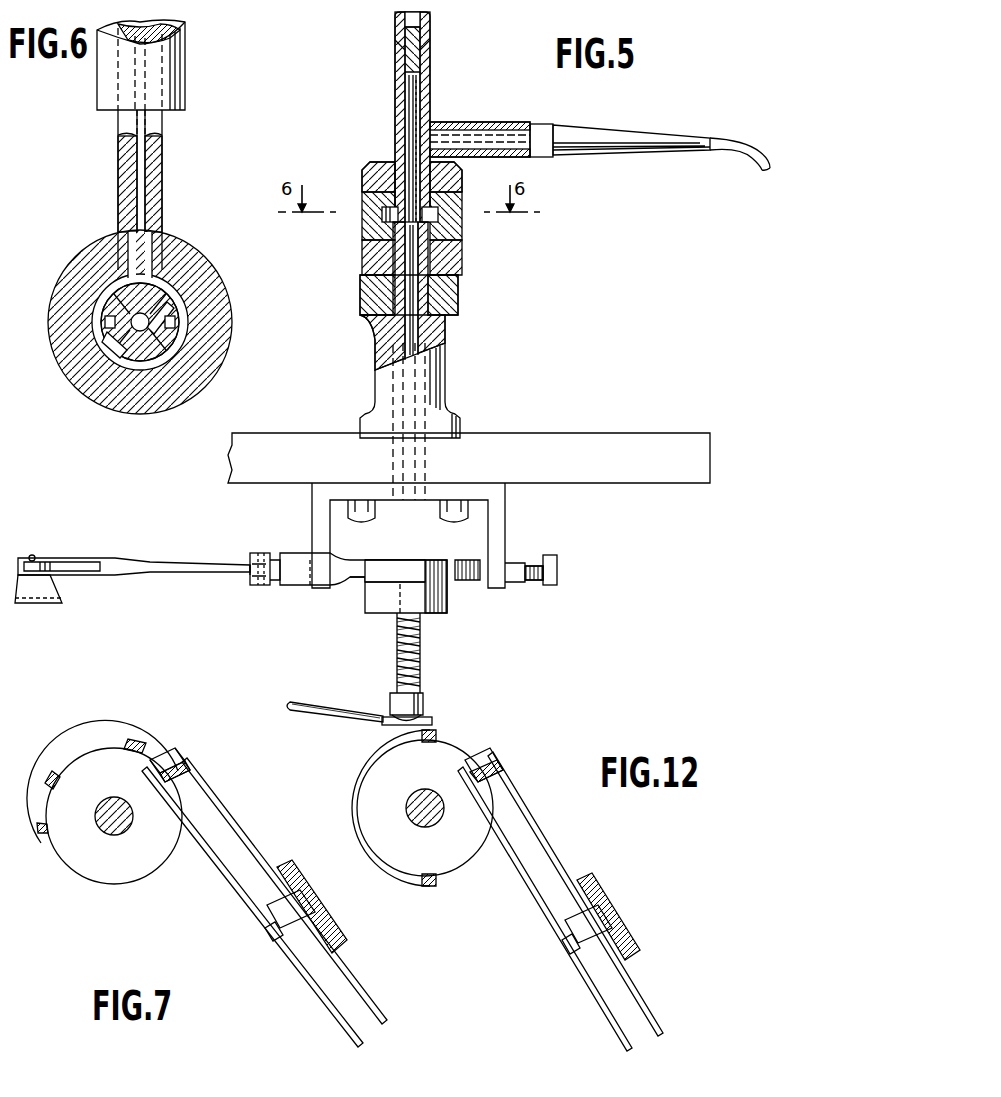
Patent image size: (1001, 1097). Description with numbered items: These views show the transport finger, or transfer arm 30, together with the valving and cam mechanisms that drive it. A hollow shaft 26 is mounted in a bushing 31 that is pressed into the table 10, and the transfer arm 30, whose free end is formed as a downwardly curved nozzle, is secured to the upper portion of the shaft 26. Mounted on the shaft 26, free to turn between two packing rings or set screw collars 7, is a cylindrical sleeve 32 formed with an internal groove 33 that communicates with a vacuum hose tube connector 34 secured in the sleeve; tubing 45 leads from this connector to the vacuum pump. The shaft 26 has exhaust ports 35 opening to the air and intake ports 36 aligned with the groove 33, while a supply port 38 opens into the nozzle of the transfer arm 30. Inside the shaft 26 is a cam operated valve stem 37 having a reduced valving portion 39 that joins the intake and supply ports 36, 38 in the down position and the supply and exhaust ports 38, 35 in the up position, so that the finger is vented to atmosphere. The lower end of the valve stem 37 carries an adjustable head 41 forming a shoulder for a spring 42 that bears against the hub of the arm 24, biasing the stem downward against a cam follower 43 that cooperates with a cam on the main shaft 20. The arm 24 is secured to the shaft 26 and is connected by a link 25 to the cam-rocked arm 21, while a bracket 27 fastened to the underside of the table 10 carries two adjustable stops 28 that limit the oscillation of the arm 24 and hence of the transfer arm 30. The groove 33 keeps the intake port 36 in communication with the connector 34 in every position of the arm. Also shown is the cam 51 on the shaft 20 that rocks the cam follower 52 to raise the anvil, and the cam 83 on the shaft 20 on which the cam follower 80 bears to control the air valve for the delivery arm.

In FIG. 6, the tubing 45 is at (168, 72).
In FIG. 6, the vacuum hose tube connector 34 is at (125, 183).
In FIG. 6, the internal groove 33 is at (100, 290).
In FIG. 5, the internal groove 33 is at (448, 240).
In FIG. 6, the cylindrical sleeve 32 is at (198, 284).
In FIG. 5, the cylindrical sleeve 32 is at (452, 210).
In FIG. 6, the intake ports 36 is at (176, 324).
In FIG. 5, the intake ports 36 is at (392, 214).
In FIG. 6, the hollow shaft 26 is at (120, 342).
In FIG. 5, the hollow shaft 26 is at (430, 320).
In FIG. 6, the cam operated valve stem 37 is at (138, 336).
In FIG. 5, the cam operated valve stem 37 is at (408, 344).
In FIG. 5, the exhaust ports 35 is at (396, 102).
In FIG. 5, the supply port 38 is at (432, 130).
In FIG. 5, the reduced valving portion 39 is at (410, 144).
In FIG. 5, the transfer arm 30 is at (605, 132).
In FIG. 5, the packing rings or set screw collars 7 is at (366, 180).
In FIG. 5, the bushing 31 is at (574, 445).
In FIG. 5, the table 10 is at (445, 378).
In FIG. 5, the bracket 27 is at (493, 530).
In FIG. 5, the adjustable stops 28 is at (258, 553).
In FIG. 5, the arm 24 is at (380, 602).
In FIG. 5, the link 25 is at (192, 572).
In FIG. 5, the arm 21 is at (33, 590).
In FIG. 5, the spring 42 is at (420, 650).
In FIG. 5, the adjustable head 41 is at (424, 702).
In FIG. 5, the cam follower 43 is at (335, 706).
In FIG. 7, the cam 51 is at (88, 775).
In FIG. 7, the shaft 20 is at (108, 830).
In FIG. 12, the shaft 20 is at (440, 820).
In FIG. 7, the cam follower 52 is at (228, 878).
In FIG. 12, the cam 83 is at (400, 824).
In FIG. 12, the cam follower 80 is at (545, 825).